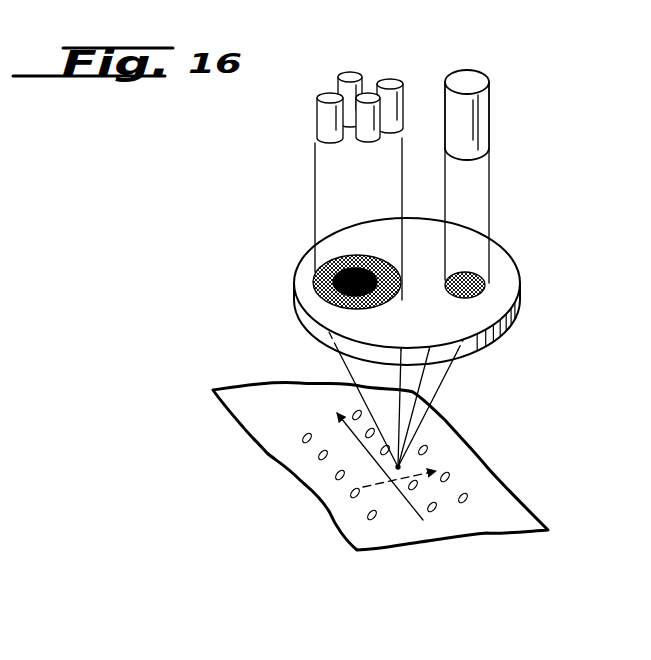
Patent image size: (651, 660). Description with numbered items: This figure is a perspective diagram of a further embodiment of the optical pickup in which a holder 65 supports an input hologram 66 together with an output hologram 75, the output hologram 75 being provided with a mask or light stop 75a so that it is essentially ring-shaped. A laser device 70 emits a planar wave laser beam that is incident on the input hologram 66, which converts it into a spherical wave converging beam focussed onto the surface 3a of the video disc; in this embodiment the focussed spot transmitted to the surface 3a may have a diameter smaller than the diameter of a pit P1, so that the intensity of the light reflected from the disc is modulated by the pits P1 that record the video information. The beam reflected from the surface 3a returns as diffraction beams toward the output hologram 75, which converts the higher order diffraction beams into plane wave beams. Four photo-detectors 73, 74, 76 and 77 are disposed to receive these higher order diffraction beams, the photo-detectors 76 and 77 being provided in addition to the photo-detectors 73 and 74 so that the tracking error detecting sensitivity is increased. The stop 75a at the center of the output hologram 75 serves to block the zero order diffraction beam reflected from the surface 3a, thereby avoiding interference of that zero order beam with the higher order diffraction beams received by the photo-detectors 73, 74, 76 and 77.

The surface of video disc 3a is at (560, 405).
The pits P1 is at (350, 495).
The holder 65 is at (498, 250).
The input hologram 66 is at (486, 287).
The output hologram 75 is at (311, 289).
The mask or light stop 75a is at (340, 264).
The laser device 70 is at (490, 120).
The photo-detector 73 is at (318, 114).
The photo-detector 74 is at (395, 78).
The photo-detector 76 is at (342, 72).
The photo-detector 77 is at (372, 139).